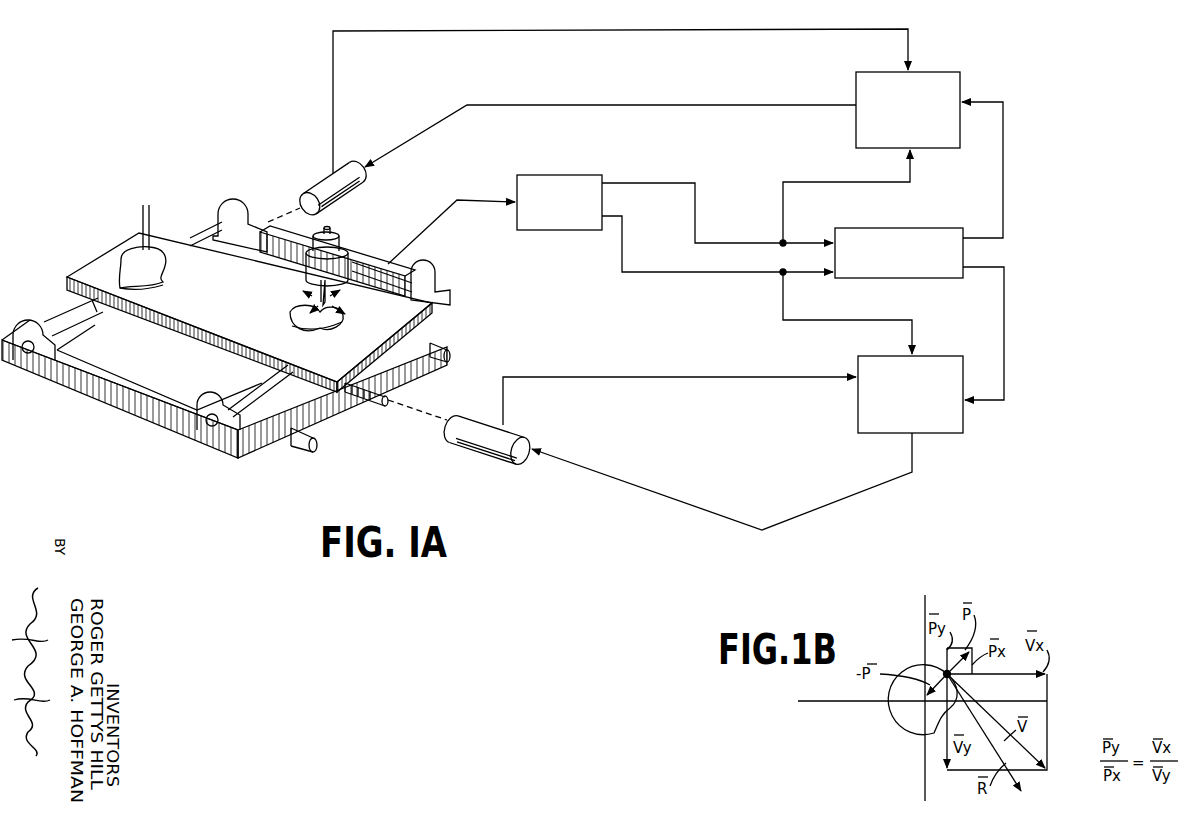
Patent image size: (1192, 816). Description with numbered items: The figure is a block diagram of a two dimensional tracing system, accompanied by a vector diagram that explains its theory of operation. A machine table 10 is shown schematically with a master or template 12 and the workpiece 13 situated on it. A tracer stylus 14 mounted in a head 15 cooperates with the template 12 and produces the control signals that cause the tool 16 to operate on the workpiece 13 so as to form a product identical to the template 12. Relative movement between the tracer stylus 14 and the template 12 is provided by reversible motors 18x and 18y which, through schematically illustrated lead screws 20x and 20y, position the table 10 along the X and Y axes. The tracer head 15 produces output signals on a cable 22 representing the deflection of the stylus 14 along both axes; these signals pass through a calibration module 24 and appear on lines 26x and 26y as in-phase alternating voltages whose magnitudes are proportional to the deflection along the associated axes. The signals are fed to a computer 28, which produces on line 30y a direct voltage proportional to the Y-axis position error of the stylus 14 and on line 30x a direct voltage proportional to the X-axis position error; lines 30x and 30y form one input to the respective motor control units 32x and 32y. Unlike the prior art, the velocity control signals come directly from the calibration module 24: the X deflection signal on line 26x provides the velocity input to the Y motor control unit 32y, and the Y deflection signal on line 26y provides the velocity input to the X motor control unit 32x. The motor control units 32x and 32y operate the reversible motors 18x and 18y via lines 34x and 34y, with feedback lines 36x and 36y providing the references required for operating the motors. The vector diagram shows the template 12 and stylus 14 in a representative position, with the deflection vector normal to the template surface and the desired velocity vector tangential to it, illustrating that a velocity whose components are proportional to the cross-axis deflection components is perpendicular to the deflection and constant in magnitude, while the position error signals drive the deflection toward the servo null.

In FIG. 1A, the machine table 10 is at (198, 324).
In FIG. 1A, the template 12 is at (292, 316).
In FIG. 1B, the template 12 is at (898, 722).
In FIG. 1A, the workpiece 13 is at (162, 270).
In FIG. 1A, the tracer stylus 14 is at (313, 289).
In FIG. 1B, the tracer stylus 14 is at (944, 672).
In FIG. 1A, the tracer head 15 is at (335, 240).
In FIG. 1A, the tool 16 is at (149, 215).
In FIG. 1A, the reversible motor 18x is at (455, 437).
In FIG. 1A, the reversible motor 18y is at (348, 170).
In FIG. 1A, the lead screw 20x is at (413, 412).
In FIG. 1A, the lead screw 20y is at (287, 212).
In FIG. 1A, the cable 22 is at (456, 201).
In FIG. 1A, the calibration module 24 is at (550, 175).
In FIG. 1A, the line 26x is at (690, 183).
In FIG. 1A, the line 26y is at (622, 216).
In FIG. 1A, the computer 28 is at (878, 228).
In FIG. 1A, the line 30x is at (1004, 345).
In FIG. 1A, the line 30y is at (1003, 130).
In FIG. 1A, the motor control unit 32x is at (880, 433).
In FIG. 1A, the motor control unit 32y is at (886, 72).
In FIG. 1A, the line 34x is at (787, 527).
In FIG. 1A, the line 34y is at (598, 105).
In FIG. 1A, the feedback line 36x is at (603, 377).
In FIG. 1A, the feedback line 36y is at (616, 31).